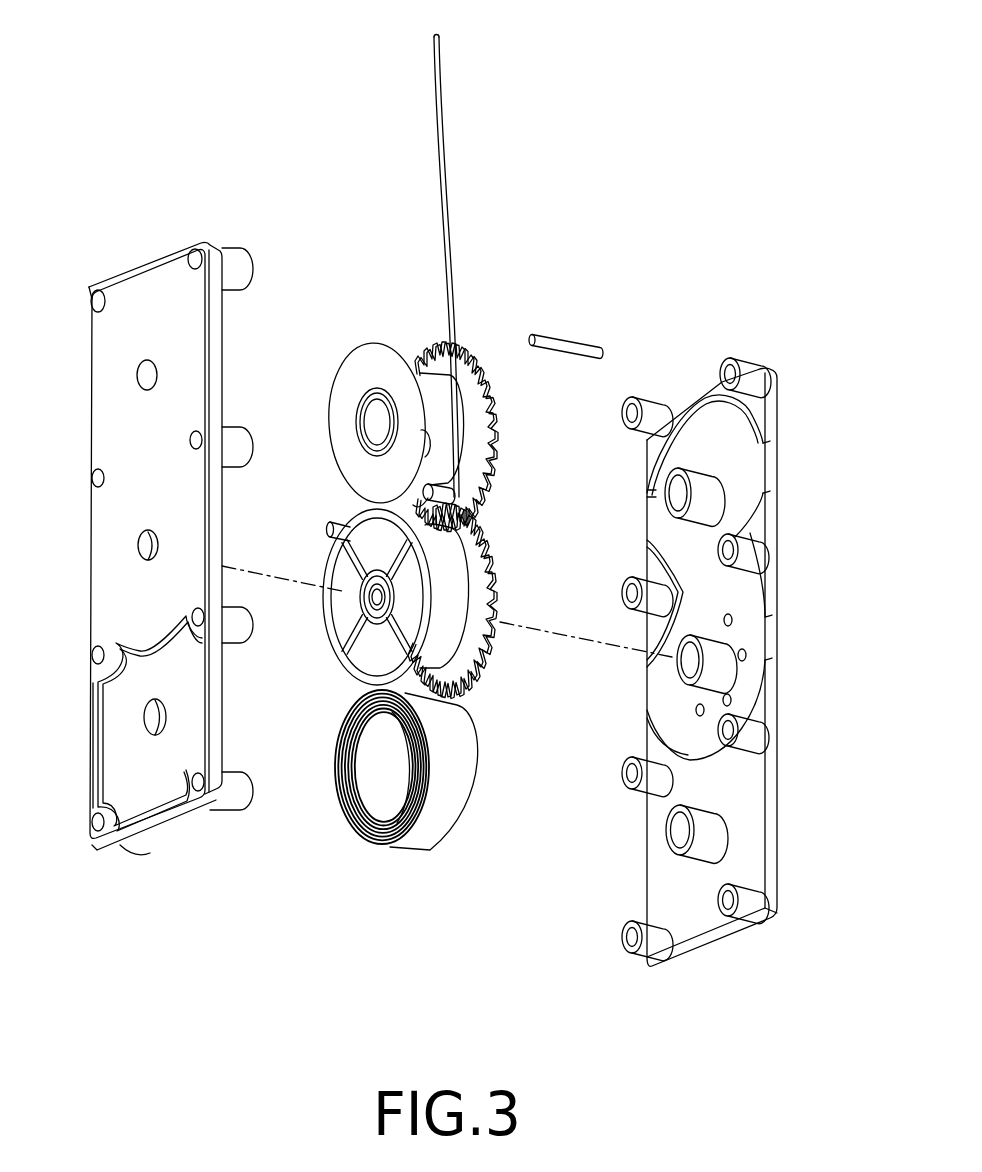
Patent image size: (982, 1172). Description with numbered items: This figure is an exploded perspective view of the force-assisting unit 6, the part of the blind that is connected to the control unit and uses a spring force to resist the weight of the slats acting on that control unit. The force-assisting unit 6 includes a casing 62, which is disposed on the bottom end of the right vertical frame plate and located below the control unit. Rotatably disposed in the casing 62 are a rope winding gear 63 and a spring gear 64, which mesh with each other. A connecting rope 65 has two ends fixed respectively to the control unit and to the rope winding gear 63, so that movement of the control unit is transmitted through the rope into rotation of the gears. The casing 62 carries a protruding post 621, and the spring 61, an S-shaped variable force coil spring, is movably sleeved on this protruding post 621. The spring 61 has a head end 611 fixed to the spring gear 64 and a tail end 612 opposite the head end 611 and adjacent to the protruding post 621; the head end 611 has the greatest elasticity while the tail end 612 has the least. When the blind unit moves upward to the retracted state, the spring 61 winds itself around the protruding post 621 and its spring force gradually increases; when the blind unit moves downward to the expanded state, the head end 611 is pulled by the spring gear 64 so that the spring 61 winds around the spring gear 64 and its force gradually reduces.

The force-assisting unit 6 is at (317, 214).
The spring 61 is at (400, 847).
The head end 611 is at (452, 680).
The tail end 612 is at (433, 752).
The casing 62 is at (752, 346).
The protruding post 621 is at (655, 833).
The rope winding gear 63 is at (353, 378).
The spring gear 64 is at (345, 662).
The connecting rope 65 is at (457, 245).